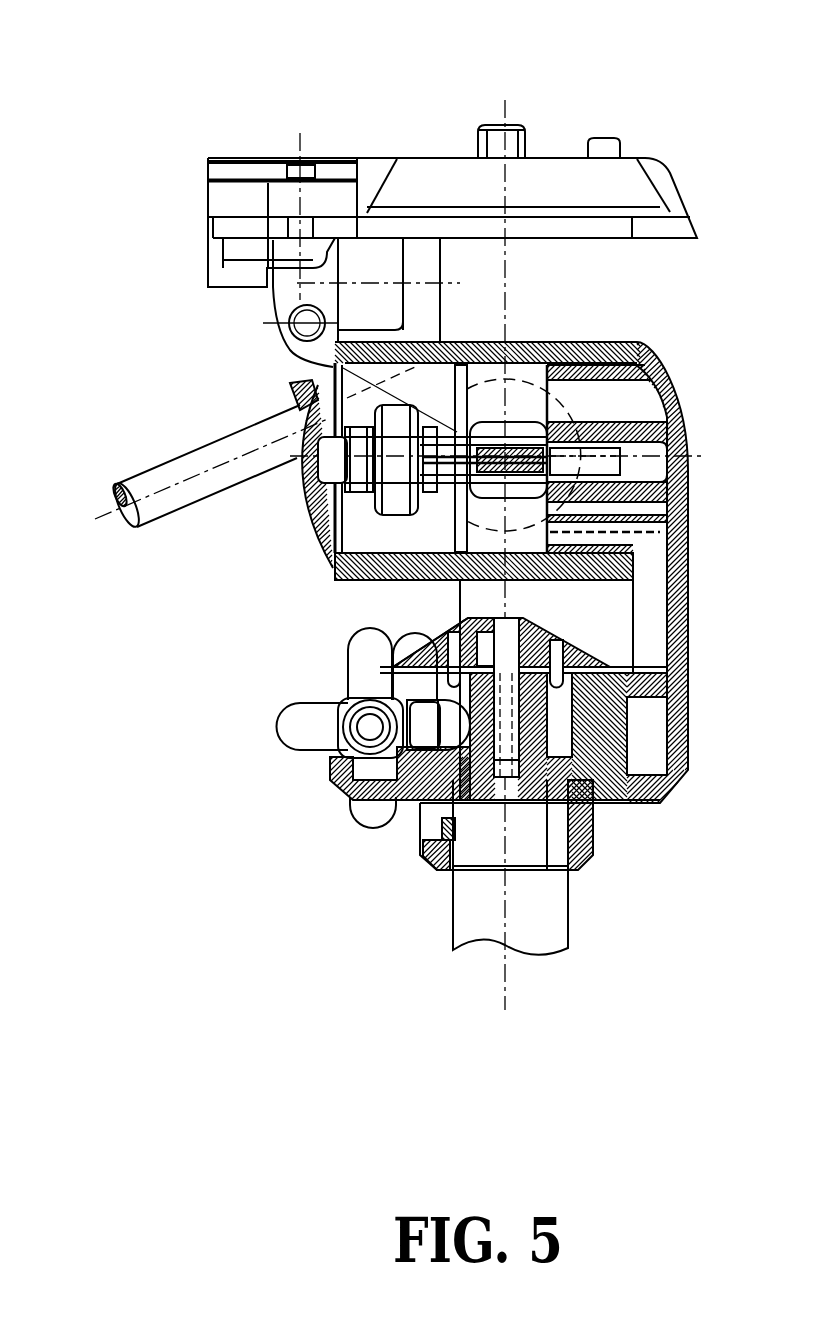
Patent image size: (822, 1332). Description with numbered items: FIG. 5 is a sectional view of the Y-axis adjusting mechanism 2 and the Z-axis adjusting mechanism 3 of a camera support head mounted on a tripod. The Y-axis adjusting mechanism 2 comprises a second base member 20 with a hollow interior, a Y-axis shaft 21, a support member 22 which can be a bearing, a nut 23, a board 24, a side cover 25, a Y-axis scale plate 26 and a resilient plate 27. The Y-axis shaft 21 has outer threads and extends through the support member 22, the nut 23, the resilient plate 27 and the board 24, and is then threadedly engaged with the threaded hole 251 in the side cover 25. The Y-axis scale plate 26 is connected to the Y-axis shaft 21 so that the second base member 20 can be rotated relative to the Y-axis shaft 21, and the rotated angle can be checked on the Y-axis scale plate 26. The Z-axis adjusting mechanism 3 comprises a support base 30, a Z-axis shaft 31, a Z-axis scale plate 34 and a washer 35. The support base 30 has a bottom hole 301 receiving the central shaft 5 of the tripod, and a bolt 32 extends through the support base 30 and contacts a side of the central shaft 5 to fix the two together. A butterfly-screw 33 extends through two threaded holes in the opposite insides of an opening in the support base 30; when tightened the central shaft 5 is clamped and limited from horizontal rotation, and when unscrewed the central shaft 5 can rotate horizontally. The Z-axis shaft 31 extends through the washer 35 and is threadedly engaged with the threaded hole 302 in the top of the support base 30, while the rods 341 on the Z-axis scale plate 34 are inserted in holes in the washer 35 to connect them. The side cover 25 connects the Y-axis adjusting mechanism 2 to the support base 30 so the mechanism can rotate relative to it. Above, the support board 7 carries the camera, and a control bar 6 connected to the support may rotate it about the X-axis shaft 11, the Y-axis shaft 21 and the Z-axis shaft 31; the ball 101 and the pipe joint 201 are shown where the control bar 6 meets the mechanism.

The Y-axis adjusting mechanism 2 is at (591, 333).
The Z-axis adjusting mechanism 3 is at (363, 867).
The central shaft 5 is at (553, 893).
The control bar 6 is at (172, 470).
The support board 7 is at (560, 150).
The X-axis shaft 11 is at (560, 428).
The second base member 20 is at (486, 343).
The Y-axis shaft 21 is at (353, 500).
The support member 22 is at (392, 515).
The nut 23 is at (428, 494).
The board 24 is at (460, 565).
The side cover 25 is at (687, 483).
The Y-axis scale plate 26 is at (308, 490).
The resilient plate 27 is at (287, 357).
The support base 30 is at (686, 790).
The Z-axis shaft 31 is at (512, 660).
The bolt 32 is at (465, 828).
The butterfly-screw 33 is at (395, 668).
The Z-axis scale plate 34 is at (558, 645).
The washer 35 is at (600, 660).
The ball 101 is at (600, 390).
The pipe joint 201 is at (288, 400).
The threaded hole 251 is at (686, 437).
The bottom hole 301 is at (440, 860).
The threaded hole 302 is at (515, 780).
The rods 341 is at (372, 650).